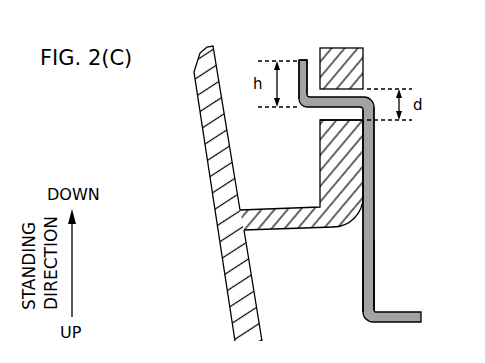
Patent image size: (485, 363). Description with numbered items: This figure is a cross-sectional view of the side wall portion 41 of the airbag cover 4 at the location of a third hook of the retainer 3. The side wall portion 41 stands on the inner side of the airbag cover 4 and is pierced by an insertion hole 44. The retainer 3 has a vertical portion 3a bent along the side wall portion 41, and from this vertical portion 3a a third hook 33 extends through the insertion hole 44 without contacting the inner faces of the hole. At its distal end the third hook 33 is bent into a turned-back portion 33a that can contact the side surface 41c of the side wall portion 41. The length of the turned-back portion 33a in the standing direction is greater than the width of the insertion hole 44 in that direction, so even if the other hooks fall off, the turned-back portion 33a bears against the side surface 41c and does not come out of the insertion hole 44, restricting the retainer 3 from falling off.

The retainer 3 is at (418, 194).
The vertical portion 3a is at (375, 274).
The airbag cover 4 is at (222, 292).
The third hook 33 is at (375, 145).
The turned-back portion 33a is at (301, 59).
The side wall portion 41 is at (319, 163).
The side surface 41c is at (316, 52).
The insertion hole 44 is at (328, 117).